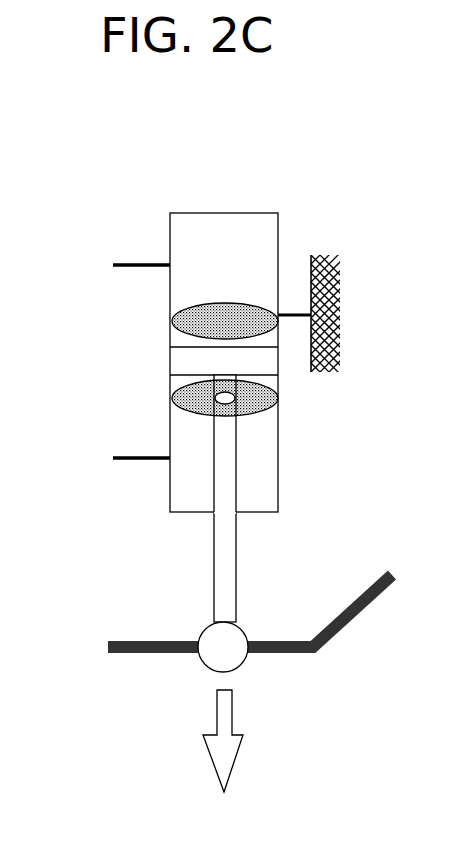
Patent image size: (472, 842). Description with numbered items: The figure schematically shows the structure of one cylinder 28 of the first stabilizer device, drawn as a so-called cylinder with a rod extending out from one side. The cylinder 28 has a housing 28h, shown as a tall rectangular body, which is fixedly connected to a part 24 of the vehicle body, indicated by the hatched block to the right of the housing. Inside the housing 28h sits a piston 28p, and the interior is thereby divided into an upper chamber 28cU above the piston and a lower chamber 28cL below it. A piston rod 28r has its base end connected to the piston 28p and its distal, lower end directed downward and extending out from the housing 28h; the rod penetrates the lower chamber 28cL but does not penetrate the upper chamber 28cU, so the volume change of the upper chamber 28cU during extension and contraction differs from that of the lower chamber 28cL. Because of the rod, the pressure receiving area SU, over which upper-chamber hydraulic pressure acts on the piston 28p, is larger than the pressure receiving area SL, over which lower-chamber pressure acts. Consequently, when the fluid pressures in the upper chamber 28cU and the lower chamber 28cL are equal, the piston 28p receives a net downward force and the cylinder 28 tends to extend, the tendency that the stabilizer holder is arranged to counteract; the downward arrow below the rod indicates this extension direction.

The cylinder 28 is at (334, 165).
The upper chamber 28cU is at (263, 263).
The lower chamber 28cL is at (270, 458).
The housing 28h is at (170, 290).
The piston 28p is at (177, 362).
The piston rod 28r is at (223, 558).
The part of the vehicle body 24 is at (337, 342).
The pressure receiving area SU is at (257, 316).
The pressure receiving area SL is at (268, 393).